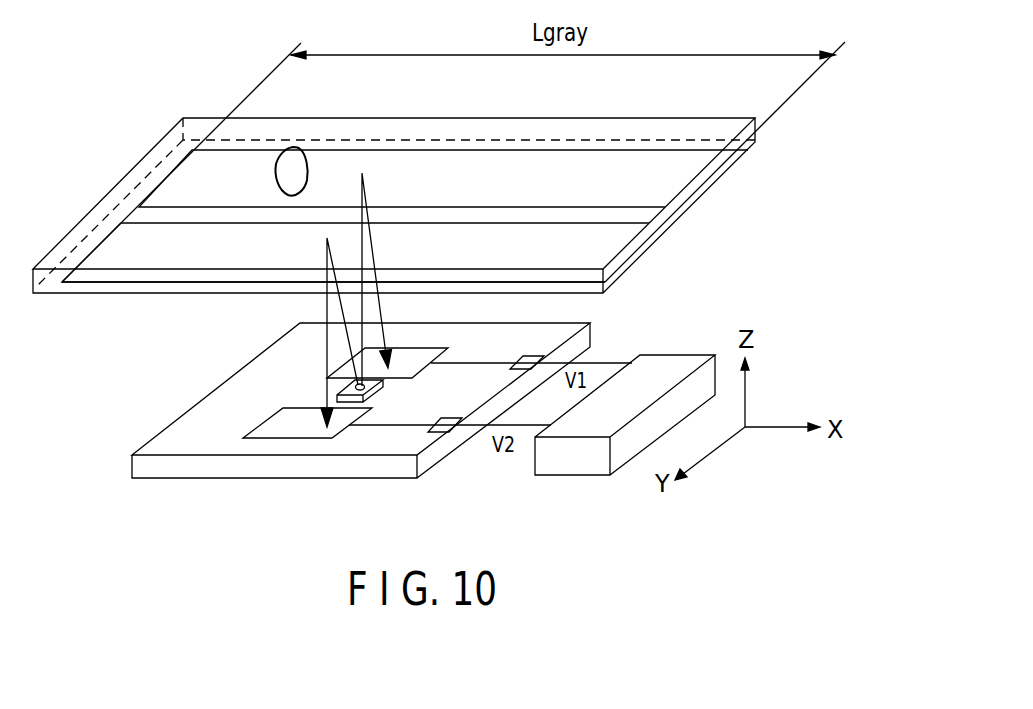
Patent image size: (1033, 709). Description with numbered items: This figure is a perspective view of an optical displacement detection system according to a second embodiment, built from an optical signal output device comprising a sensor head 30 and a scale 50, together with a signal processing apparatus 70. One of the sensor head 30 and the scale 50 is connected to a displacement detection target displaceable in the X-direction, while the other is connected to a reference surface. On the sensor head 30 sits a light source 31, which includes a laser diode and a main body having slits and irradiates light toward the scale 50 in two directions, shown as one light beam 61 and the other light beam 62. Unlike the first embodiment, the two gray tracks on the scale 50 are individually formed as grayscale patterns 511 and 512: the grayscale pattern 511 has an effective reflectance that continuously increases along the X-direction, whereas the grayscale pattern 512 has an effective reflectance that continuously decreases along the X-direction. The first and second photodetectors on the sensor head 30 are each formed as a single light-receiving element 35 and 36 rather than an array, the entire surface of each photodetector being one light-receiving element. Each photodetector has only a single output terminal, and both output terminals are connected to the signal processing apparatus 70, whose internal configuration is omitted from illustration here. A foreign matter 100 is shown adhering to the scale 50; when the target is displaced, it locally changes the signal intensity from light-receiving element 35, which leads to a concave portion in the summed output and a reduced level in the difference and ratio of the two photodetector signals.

The sensor head 30 is at (165, 463).
The light source 31 is at (342, 390).
The light-receiving element 35 is at (350, 368).
The light-receiving element 36 is at (295, 428).
The scale 50 is at (567, 118).
The light beam 61 is at (363, 303).
The light beam 62 is at (327, 303).
The signal processing apparatus 70 is at (662, 370).
The foreign matter 100 is at (295, 152).
The grayscale pattern 511 is at (187, 180).
The grayscale pattern 512 is at (117, 248).